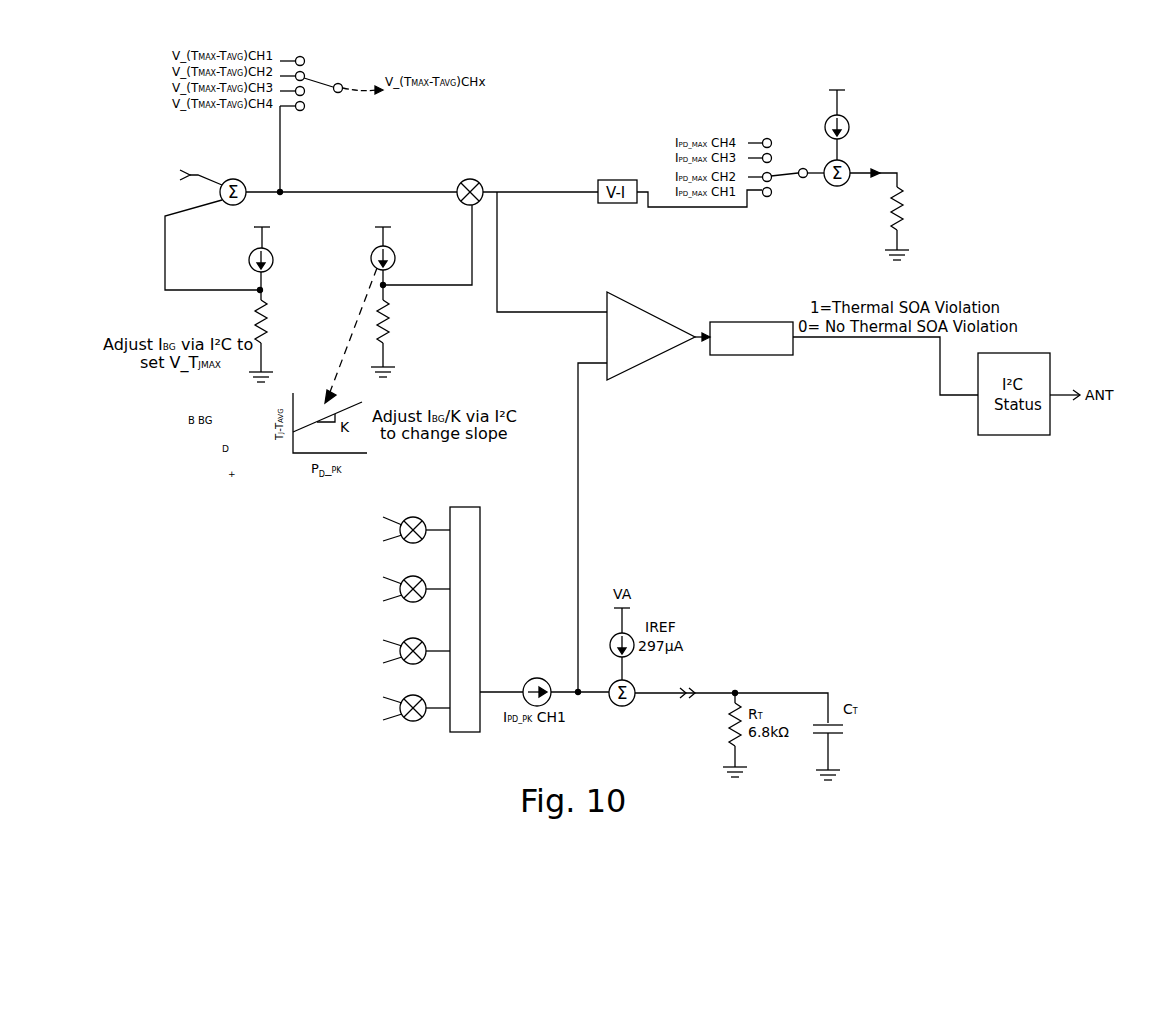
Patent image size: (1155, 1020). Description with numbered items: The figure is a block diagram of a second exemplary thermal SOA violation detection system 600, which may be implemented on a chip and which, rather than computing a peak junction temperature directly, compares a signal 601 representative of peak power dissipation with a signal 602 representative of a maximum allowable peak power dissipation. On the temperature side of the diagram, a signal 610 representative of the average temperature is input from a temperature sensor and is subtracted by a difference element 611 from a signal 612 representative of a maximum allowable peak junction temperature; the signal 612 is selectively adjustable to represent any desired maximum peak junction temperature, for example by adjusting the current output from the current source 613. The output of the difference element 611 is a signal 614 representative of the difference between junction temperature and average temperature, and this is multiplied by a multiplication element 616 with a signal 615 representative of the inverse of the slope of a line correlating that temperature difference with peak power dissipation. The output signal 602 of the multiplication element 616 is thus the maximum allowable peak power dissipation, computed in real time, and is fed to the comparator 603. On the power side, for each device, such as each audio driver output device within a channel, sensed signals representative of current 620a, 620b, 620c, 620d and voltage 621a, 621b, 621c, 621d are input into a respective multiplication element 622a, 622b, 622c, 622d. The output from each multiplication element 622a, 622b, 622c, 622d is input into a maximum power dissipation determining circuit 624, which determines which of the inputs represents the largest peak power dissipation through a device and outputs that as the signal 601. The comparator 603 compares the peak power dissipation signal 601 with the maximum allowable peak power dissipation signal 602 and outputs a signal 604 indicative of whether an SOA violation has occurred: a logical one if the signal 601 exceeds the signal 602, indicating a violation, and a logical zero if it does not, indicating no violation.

The thermal SOA violation detection system 600 is at (925, 75).
The signal representative of peak power dissipation 601 is at (578, 430).
The signal representative of maximum allowable peak power dissipation 602 is at (527, 312).
The comparator 603 is at (650, 308).
The output signal 604 is at (697, 333).
The signal representative of average temperature 610 is at (198, 175).
The difference element 611 is at (244, 182).
The signal representative of maximum allowable peak junction temperature 612 is at (165, 268).
The current source 613 is at (270, 250).
The signal representative of temperature difference 614 is at (428, 188).
The signal representative of inverse slope 615 is at (472, 250).
The multiplication element 616 is at (472, 178).
The sensed current signal 620a is at (383, 517).
The sensed current signal 620b is at (400, 572).
The sensed current signal 620c is at (403, 631).
The sensed current signal 620d is at (385, 697).
The sensed voltage signal 621a is at (387, 540).
The sensed voltage signal 621b is at (393, 602).
The sensed voltage signal 621c is at (390, 662).
The sensed voltage signal 621d is at (393, 718).
The multiplication element 622a is at (417, 518).
The multiplication element 622b is at (423, 577).
The multiplication element 622c is at (423, 640).
The multiplication element 622d is at (410, 727).
The maximum power dissipation determining circuit 624 is at (482, 668).